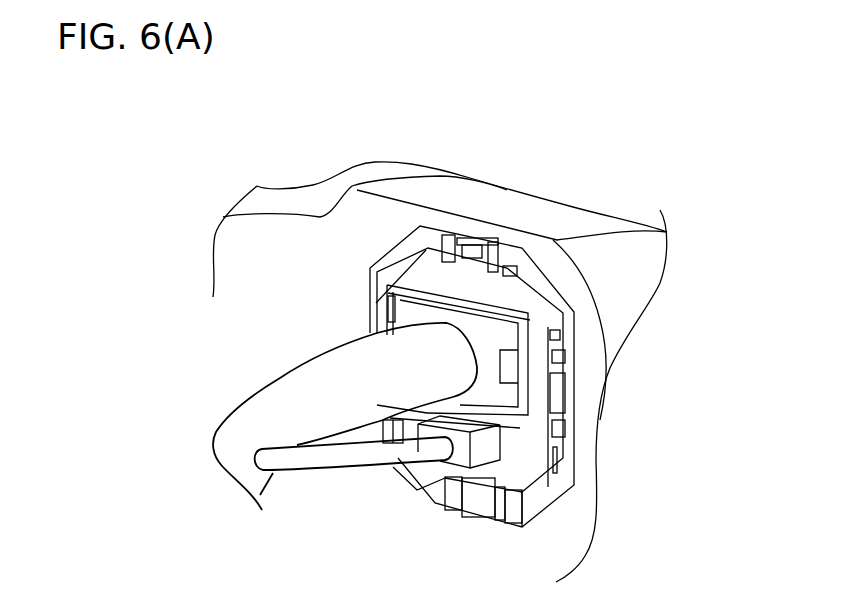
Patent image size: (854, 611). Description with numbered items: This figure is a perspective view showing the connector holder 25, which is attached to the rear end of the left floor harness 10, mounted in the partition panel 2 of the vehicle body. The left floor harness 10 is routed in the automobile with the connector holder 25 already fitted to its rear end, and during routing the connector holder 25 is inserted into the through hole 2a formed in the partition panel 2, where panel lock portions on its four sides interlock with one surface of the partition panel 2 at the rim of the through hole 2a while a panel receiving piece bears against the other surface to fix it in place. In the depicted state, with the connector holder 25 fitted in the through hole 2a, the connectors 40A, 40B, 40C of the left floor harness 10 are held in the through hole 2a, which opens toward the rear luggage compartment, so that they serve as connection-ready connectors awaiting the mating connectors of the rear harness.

The partition panel 2 is at (342, 233).
The through hole 2a is at (546, 283).
The left floor harness 10 is at (235, 423).
The connector holder 25 is at (407, 243).
The connector 40A is at (485, 450).
The connector 40B is at (395, 428).
The connector 40C is at (483, 347).